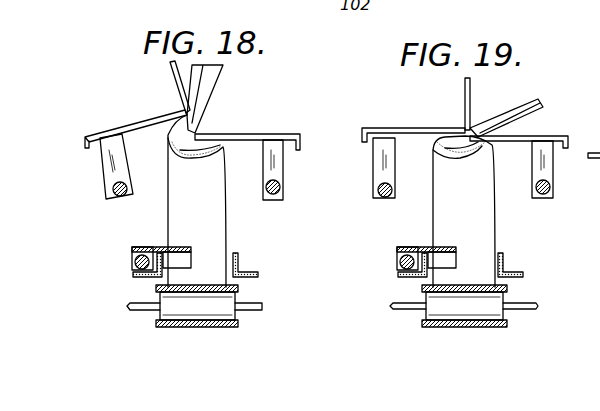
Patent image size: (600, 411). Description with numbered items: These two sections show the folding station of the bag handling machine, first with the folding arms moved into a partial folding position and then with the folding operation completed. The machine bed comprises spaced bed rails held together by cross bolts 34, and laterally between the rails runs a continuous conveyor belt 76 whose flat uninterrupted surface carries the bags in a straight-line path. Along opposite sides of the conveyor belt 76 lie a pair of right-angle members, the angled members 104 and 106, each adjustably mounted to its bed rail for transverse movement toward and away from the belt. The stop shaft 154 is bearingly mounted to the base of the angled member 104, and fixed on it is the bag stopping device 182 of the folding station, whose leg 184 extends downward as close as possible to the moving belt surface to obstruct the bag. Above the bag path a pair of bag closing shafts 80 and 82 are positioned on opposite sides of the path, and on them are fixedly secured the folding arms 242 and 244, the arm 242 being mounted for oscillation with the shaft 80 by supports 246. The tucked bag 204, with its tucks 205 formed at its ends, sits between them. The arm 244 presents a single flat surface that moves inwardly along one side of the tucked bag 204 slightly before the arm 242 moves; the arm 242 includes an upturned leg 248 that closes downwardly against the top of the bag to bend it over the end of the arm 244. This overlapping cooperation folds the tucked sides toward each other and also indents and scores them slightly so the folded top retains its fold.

In FIG. 18, the cross bolt 34 is at (148, 312).
In FIG. 19, the cross bolt 34 is at (405, 310).
In FIG. 18, the conveyor belt 76 is at (240, 289).
In FIG. 19, the conveyor belt 76 is at (508, 288).
In FIG. 18, the bag closing shaft 80 is at (110, 196).
In FIG. 19, the bag closing shaft 80 is at (390, 199).
In FIG. 18, the bag closing shaft 82 is at (284, 194).
In FIG. 19, the bag closing shaft 82 is at (542, 199).
In FIG. 18, the angled member 104 is at (134, 277).
In FIG. 19, the angled member 104 is at (399, 277).
In FIG. 18, the angled member 106 is at (250, 274).
In FIG. 19, the angled member 106 is at (517, 274).
In FIG. 18, the stop shaft 154 is at (134, 263).
In FIG. 19, the stop shaft 154 is at (399, 262).
In FIG. 18, the bag stopping device 182 is at (140, 248).
In FIG. 19, the bag stopping device 182 is at (407, 248).
In FIG. 18, the leg 184 is at (182, 260).
In FIG. 19, the leg 184 is at (447, 258).
In FIG. 18, the tucked bag 204 is at (226, 221).
In FIG. 19, the tucked bag 204 is at (487, 222).
In FIG. 18, the tuck 205 is at (198, 153).
In FIG. 19, the tuck 205 is at (470, 150).
In FIG. 18, the folding arm 242 is at (152, 117).
In FIG. 19, the folding arm 242 is at (418, 128).
In FIG. 18, the folding arm 244 is at (250, 134).
In FIG. 19, the folding arm 244 is at (545, 136).
In FIG. 18, the support 246 is at (117, 146).
In FIG. 19, the support 246 is at (393, 150).
In FIG. 18, the upturned leg 248 is at (177, 83).
In FIG. 19, the upturned leg 248 is at (465, 96).